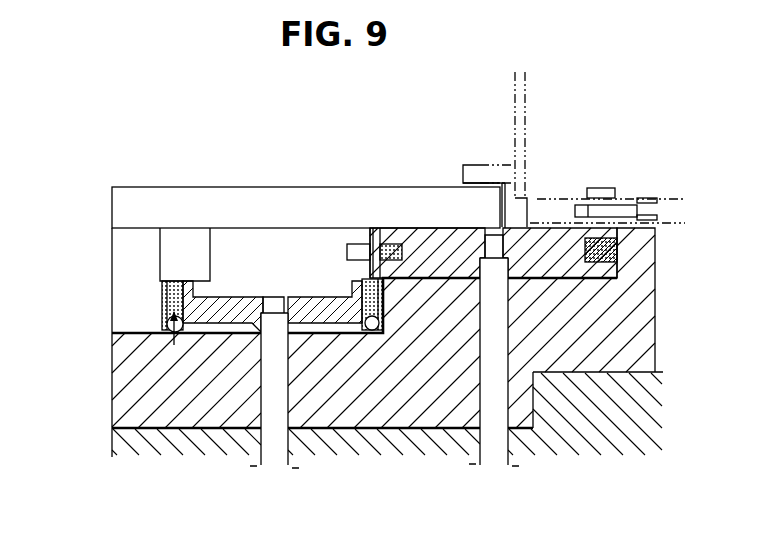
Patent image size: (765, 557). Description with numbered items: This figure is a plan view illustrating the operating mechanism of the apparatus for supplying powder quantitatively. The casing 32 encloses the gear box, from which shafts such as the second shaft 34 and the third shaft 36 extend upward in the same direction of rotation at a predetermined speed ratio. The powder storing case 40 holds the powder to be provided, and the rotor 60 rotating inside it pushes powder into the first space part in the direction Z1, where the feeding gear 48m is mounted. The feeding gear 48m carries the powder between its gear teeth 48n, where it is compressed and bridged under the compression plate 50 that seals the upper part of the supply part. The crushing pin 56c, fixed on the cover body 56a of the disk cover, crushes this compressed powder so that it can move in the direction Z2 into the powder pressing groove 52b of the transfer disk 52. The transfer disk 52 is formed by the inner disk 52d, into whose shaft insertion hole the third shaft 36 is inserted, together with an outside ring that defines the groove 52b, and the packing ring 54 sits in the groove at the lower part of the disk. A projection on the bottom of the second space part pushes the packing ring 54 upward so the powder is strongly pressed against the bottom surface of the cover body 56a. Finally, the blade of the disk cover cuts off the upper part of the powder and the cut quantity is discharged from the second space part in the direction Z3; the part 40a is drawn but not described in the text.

The compression plate 50 is at (280, 205).
The transfer disk 52 is at (269, 323).
The powder pressing groove 52b is at (180, 281).
The inner disk 52d is at (242, 297).
The packing ring 54 is at (132, 334).
The casing 32 is at (135, 443).
The second shaft 34 is at (490, 447).
The third shaft 36 is at (273, 447).
The powder storing case 40 is at (530, 101).
The rod bracket 40a is at (482, 163).
The feeding gear 48m is at (533, 226).
The gear teeth 48n is at (386, 250).
The cover body 56a is at (330, 247).
The crushing pin 56c is at (398, 262).
The rotor 60 is at (657, 197).
The direction z1 Z1 is at (597, 246).
The direction z2 Z2 is at (376, 292).
The direction z3 Z3 is at (173, 284).